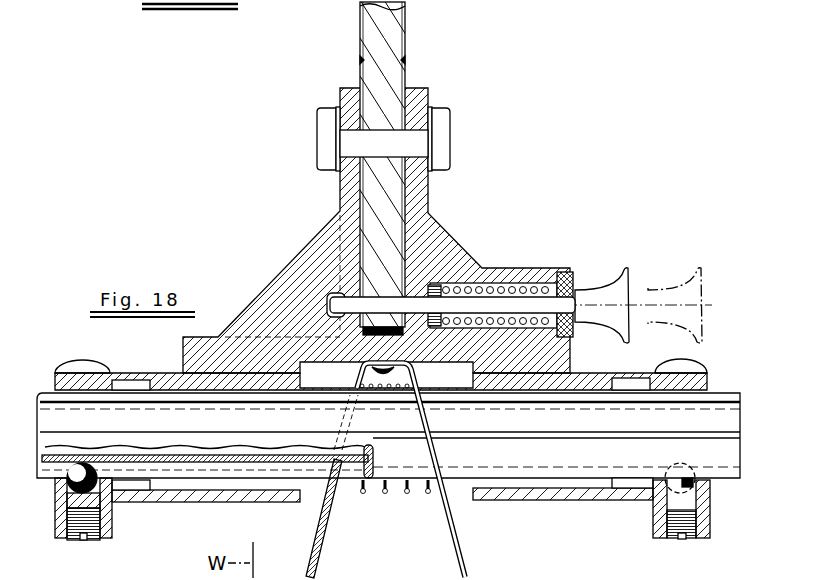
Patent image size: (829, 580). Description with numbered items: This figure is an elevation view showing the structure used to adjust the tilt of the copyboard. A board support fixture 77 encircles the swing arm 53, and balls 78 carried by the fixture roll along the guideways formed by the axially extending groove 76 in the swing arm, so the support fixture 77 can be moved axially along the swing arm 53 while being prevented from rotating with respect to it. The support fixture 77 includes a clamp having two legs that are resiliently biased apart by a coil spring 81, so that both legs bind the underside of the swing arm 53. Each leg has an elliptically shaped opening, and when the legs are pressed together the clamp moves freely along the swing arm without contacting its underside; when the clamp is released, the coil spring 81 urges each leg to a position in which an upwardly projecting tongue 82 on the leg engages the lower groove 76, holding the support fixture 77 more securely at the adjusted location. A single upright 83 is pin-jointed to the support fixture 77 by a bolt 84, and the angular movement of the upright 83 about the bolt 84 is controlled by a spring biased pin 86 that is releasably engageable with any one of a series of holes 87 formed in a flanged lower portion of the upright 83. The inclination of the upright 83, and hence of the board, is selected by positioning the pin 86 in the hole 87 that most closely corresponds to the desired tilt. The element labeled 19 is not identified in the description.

The wire 19 is at (462, 540).
The swing arm 53 is at (732, 387).
The axially extending groove 76 is at (725, 422).
The board support fixture 77 is at (292, 256).
The balls 78 is at (72, 481).
The coil spring 81 is at (403, 489).
The upwardly projecting tongue 82 is at (336, 468).
The upright 83 is at (408, 28).
The bolt 84 is at (443, 145).
The spring biased pin 86 is at (500, 285).
The hole 87 is at (378, 305).